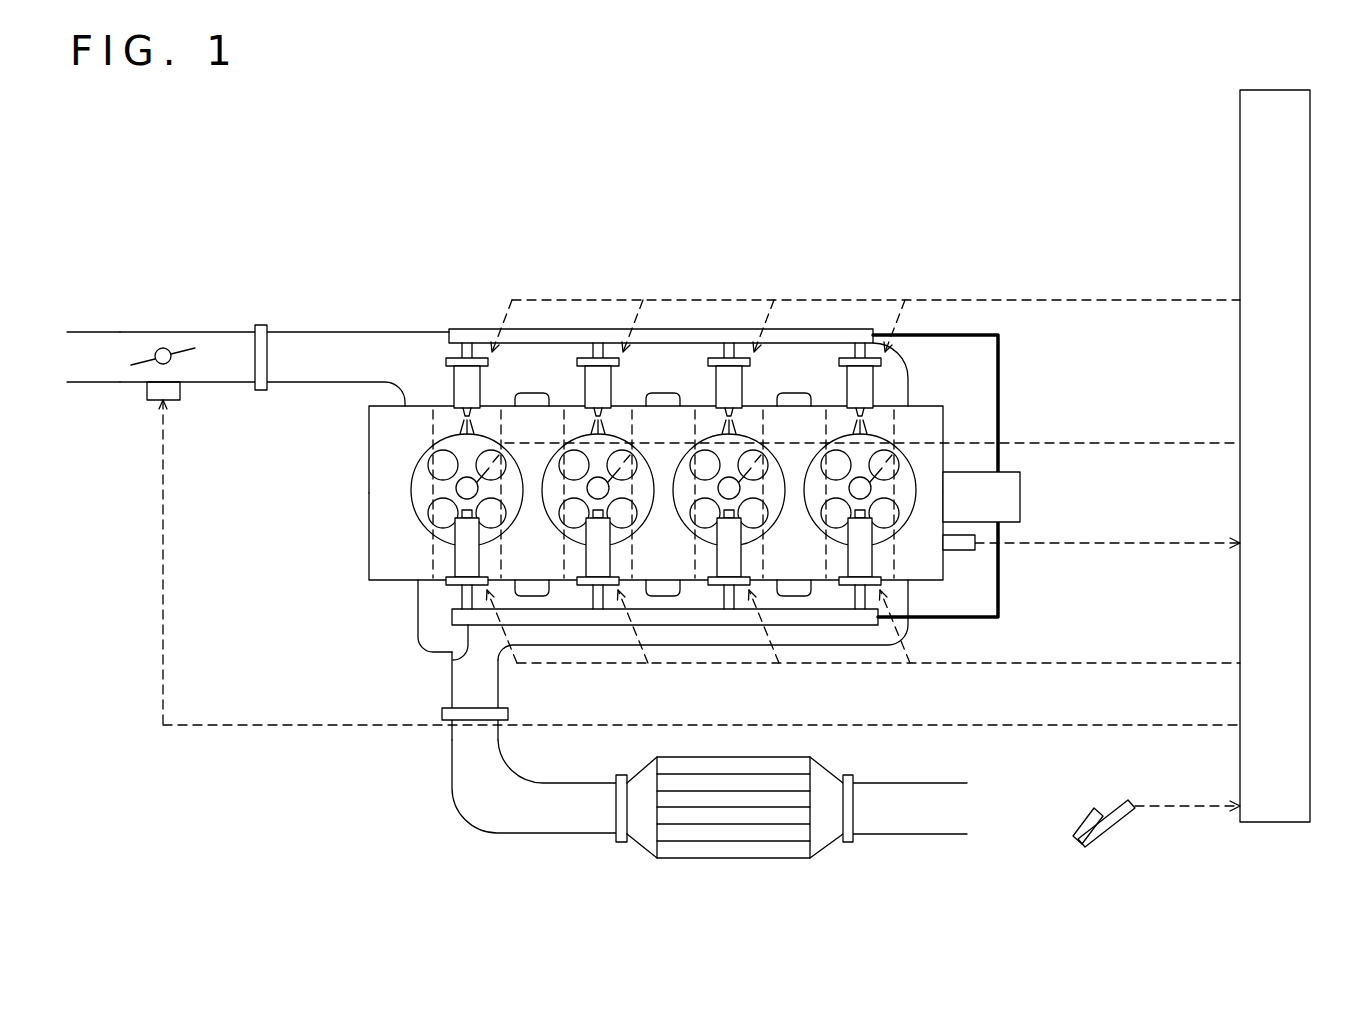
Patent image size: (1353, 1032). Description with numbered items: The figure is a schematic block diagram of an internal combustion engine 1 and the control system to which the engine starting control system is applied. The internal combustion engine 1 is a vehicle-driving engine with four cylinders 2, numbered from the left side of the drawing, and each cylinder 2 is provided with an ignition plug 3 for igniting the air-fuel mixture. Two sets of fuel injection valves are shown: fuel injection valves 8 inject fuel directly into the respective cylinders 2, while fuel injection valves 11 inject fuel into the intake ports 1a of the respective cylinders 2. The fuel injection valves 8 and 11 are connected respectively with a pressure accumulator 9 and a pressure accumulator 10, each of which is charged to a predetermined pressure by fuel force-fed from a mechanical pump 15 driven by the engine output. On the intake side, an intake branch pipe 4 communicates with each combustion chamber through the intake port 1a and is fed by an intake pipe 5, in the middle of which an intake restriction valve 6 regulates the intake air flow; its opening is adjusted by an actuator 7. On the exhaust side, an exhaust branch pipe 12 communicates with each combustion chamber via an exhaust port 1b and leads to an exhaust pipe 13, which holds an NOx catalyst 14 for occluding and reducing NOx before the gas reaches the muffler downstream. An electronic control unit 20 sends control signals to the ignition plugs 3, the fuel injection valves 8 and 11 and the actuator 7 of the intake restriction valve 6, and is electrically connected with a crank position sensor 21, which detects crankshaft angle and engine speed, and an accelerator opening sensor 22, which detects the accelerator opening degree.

The internal combustion engine 1 is at (624, 555).
The intake port 1a is at (442, 425).
The exhaust port 1b is at (438, 553).
The cylinder 2 is at (412, 470).
The ignition plug 3 is at (420, 487).
The intake branch pipe 4 is at (298, 332).
The intake pipe 5 is at (92, 383).
The intake restriction valve 6 is at (157, 364).
The actuator 7 is at (178, 400).
The fuel injection valve 8 is at (443, 597).
The pressure accumulator 9 is at (438, 657).
The pressure accumulator 10 is at (459, 329).
The fuel injection valve 11 is at (873, 382).
The exhaust branch pipe 12 is at (499, 688).
The exhaust pipe 13 is at (562, 835).
The NOx catalyst 14 is at (737, 858).
The mechanical pump 15 is at (1021, 497).
The electronic control unit 20 is at (1272, 823).
The crank position sensor 21 is at (958, 551).
The accelerator opening sensor 22 is at (1096, 848).